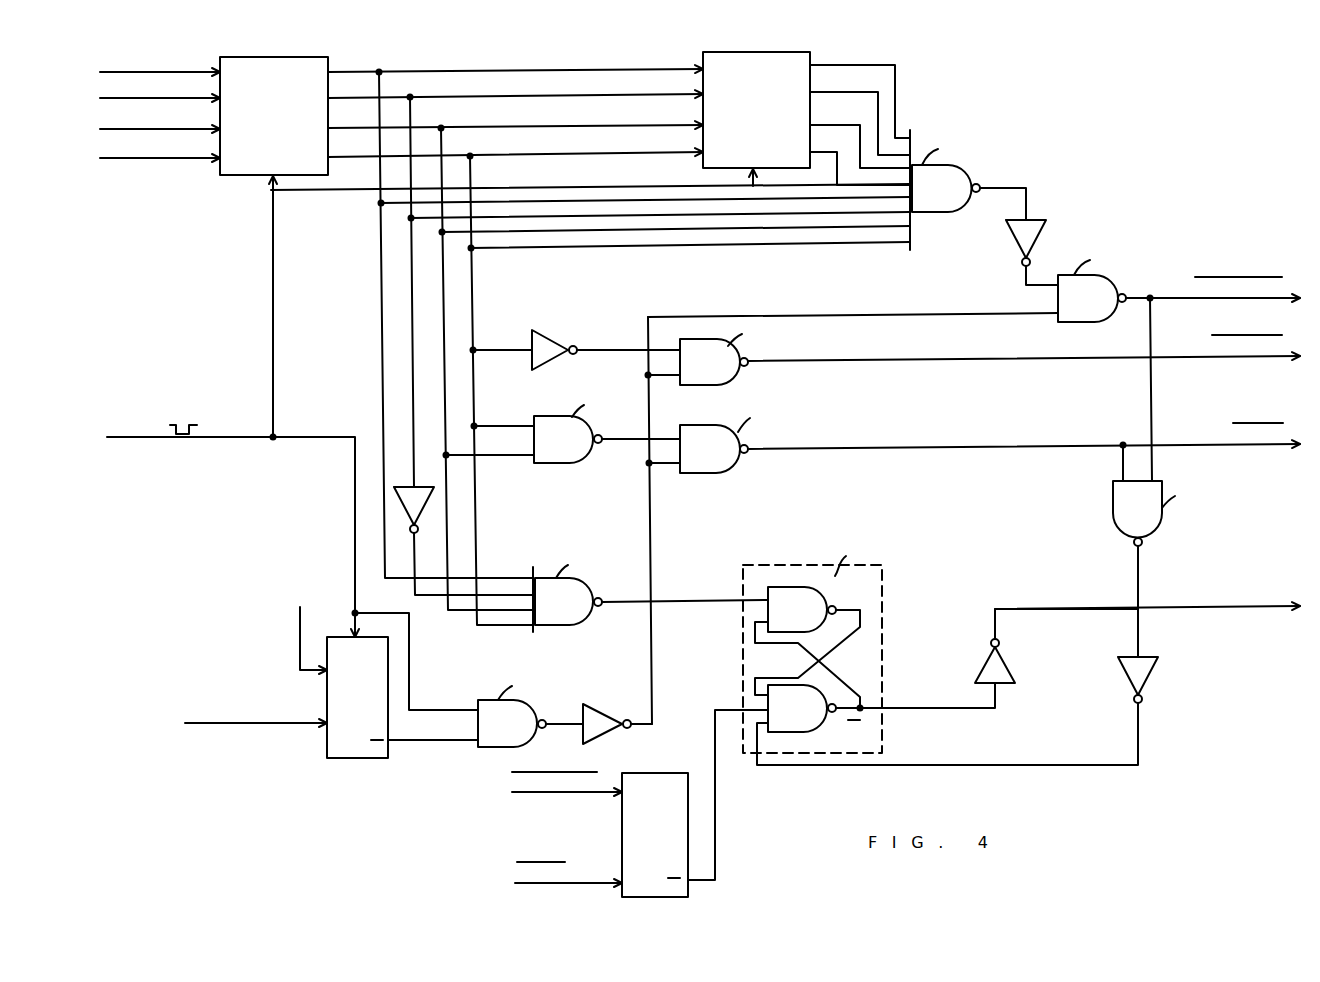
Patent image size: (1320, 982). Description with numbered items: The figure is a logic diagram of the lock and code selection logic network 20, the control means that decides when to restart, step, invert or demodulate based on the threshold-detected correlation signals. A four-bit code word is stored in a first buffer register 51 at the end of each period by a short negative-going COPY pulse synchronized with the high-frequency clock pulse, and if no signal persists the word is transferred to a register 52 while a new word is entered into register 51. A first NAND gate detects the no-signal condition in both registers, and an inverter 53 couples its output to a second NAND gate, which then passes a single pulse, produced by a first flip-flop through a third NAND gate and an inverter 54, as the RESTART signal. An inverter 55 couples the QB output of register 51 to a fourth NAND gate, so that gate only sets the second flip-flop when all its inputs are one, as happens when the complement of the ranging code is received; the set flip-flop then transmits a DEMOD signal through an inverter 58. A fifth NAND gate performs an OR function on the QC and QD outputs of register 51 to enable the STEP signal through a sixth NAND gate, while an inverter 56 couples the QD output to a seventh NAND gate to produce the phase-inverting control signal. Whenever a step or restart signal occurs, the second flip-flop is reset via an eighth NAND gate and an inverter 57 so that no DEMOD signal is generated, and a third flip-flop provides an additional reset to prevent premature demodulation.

The lock and code selection logic network 20 is at (1103, 135).
The first buffer register 51 is at (292, 57).
The register 52 is at (765, 52).
The inverter 53 is at (1040, 233).
The inverter 54 is at (616, 702).
The inverter 55 is at (424, 505).
The inverter 56 is at (553, 338).
The inverter 57 is at (1150, 674).
The inverter 58 is at (1012, 668).